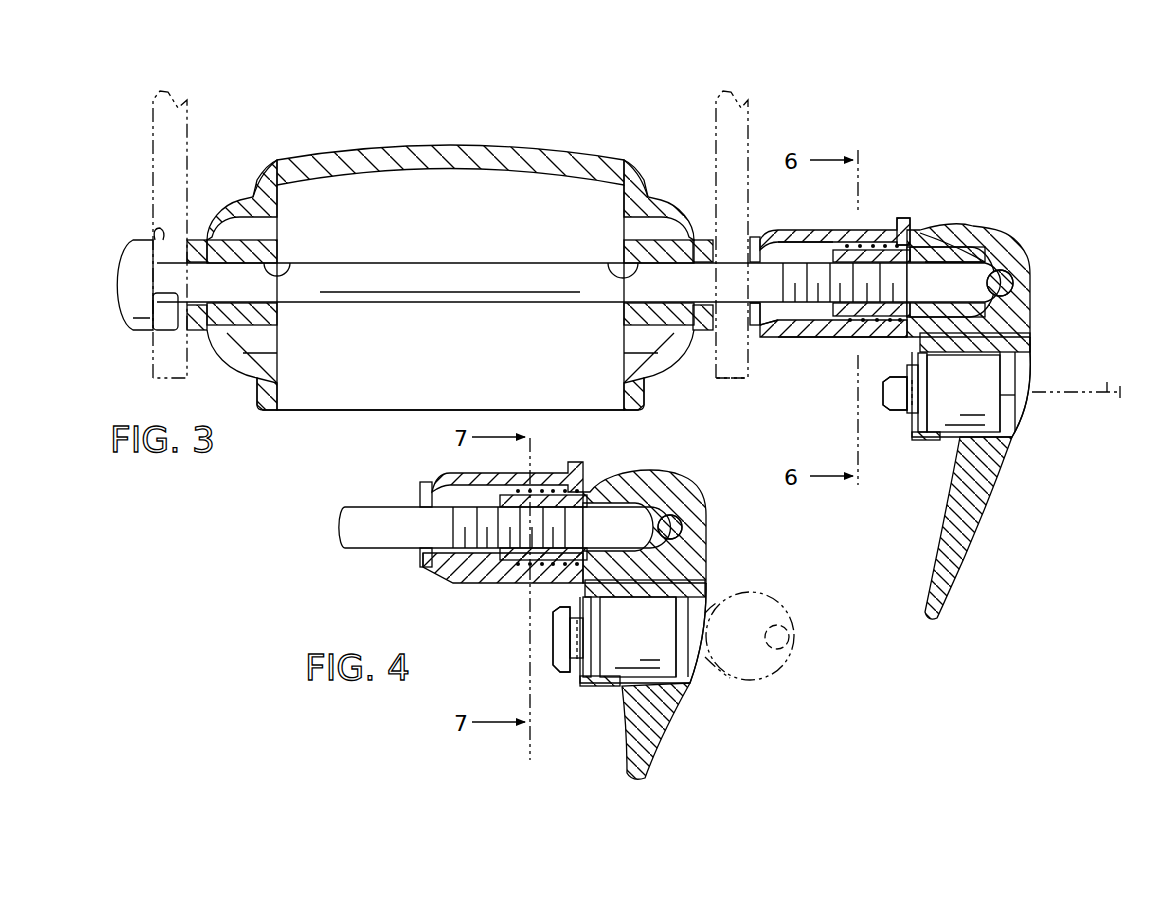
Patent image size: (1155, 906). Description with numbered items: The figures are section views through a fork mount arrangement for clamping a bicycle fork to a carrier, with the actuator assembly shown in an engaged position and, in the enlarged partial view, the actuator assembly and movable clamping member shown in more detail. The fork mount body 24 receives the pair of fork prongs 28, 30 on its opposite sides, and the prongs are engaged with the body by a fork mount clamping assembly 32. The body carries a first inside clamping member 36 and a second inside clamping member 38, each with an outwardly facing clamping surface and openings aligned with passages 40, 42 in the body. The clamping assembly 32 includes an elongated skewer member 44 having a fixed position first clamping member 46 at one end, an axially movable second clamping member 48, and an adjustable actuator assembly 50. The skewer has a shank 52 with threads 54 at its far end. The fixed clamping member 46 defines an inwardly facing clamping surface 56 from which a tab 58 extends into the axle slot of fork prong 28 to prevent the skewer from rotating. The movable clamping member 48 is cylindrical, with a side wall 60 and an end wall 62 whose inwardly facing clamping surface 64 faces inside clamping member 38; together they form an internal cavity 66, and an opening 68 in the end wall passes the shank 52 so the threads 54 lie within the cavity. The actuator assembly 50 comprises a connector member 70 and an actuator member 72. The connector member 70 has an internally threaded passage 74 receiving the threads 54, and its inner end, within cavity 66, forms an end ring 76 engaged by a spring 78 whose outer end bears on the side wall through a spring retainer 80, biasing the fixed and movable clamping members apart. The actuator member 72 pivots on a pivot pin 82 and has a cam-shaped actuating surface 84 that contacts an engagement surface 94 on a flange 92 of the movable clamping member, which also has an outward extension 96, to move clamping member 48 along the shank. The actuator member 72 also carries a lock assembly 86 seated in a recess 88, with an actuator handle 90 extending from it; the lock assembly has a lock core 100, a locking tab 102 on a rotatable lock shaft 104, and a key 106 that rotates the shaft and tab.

In FIG. 3, the fork mount body 24 is at (452, 146).
In FIG. 3, the fork prong 28 is at (190, 113).
In FIG. 3, the fork prong 30 is at (750, 132).
In FIG. 3, the fork mount clamping assembly 32 is at (968, 135).
In FIG. 3, the first inside clamping member 36 is at (196, 240).
In FIG. 3, the second inside clamping member 38 is at (702, 240).
In FIG. 3, the passage 40 is at (288, 262).
In FIG. 3, the passage 42 is at (620, 264).
In FIG. 3, the skewer member 44 is at (352, 332).
In FIG. 3, the fixed position first clamping member 46 is at (110, 268).
In FIG. 3, the movable second clamping member 48 is at (878, 228).
In FIG. 4, the movable second clamping member 48 is at (452, 474).
In FIG. 3, the adjustable actuator assembly 50 is at (1037, 245).
In FIG. 3, the shank 52 is at (432, 262).
In FIG. 4, the shank 52 is at (372, 549).
In FIG. 3, the threads 54 is at (757, 322).
In FIG. 4, the threads 54 is at (468, 580).
In FIG. 3, the inwardly facing clamping surface 56 is at (158, 238).
In FIG. 3, the tab 58 is at (160, 318).
In FIG. 3, the side wall 60 is at (785, 336).
In FIG. 3, the end wall 62 is at (765, 312).
In FIG. 3, the inwardly facing clamping surface 64 is at (747, 328).
In FIG. 3, the internal cavity 66 is at (803, 242).
In FIG. 3, the opening 68 is at (760, 238).
In FIG. 3, the connector member 70 is at (1002, 232).
In FIG. 4, the connector member 70 is at (650, 480).
In FIG. 3, the actuator member 72 is at (1020, 441).
In FIG. 4, the actuator member 72 is at (692, 686).
In FIG. 3, the internally threaded passage 74 is at (975, 248).
In FIG. 3, the end ring 76 is at (835, 246).
In FIG. 4, the end ring 76 is at (543, 527).
In FIG. 3, the spring 78 is at (862, 337).
In FIG. 3, the spring retainer 80 is at (920, 256).
In FIG. 3, the pivot pin 82 is at (1013, 283).
In FIG. 4, the pivot pin 82 is at (670, 527).
In FIG. 3, the cam-shaped actuating surface 84 is at (1000, 236).
In FIG. 3, the lock assembly 86 is at (1024, 364).
In FIG. 4, the lock assembly 86 is at (645, 588).
In FIG. 3, the recess 88 is at (1005, 395).
In FIG. 3, the actuator handle 90 is at (945, 598).
In FIG. 4, the actuator handle 90 is at (655, 750).
In FIG. 3, the flange 92 is at (902, 218).
In FIG. 3, the engagement surface 94 is at (915, 247).
In FIG. 3, the outward extension 96 is at (895, 366).
In FIG. 4, the outward extension 96 is at (556, 607).
In FIG. 3, the lock core 100 is at (940, 430).
In FIG. 4, the lock core 100 is at (638, 637).
In FIG. 3, the locking tab 102 is at (887, 395).
In FIG. 4, the locking tab 102 is at (562, 675).
In FIG. 3, the lock shaft 104 is at (905, 410).
In FIG. 4, the lock shaft 104 is at (578, 680).
In FIG. 3, the key 106 is at (1107, 380).
In FIG. 4, the key 106 is at (790, 603).